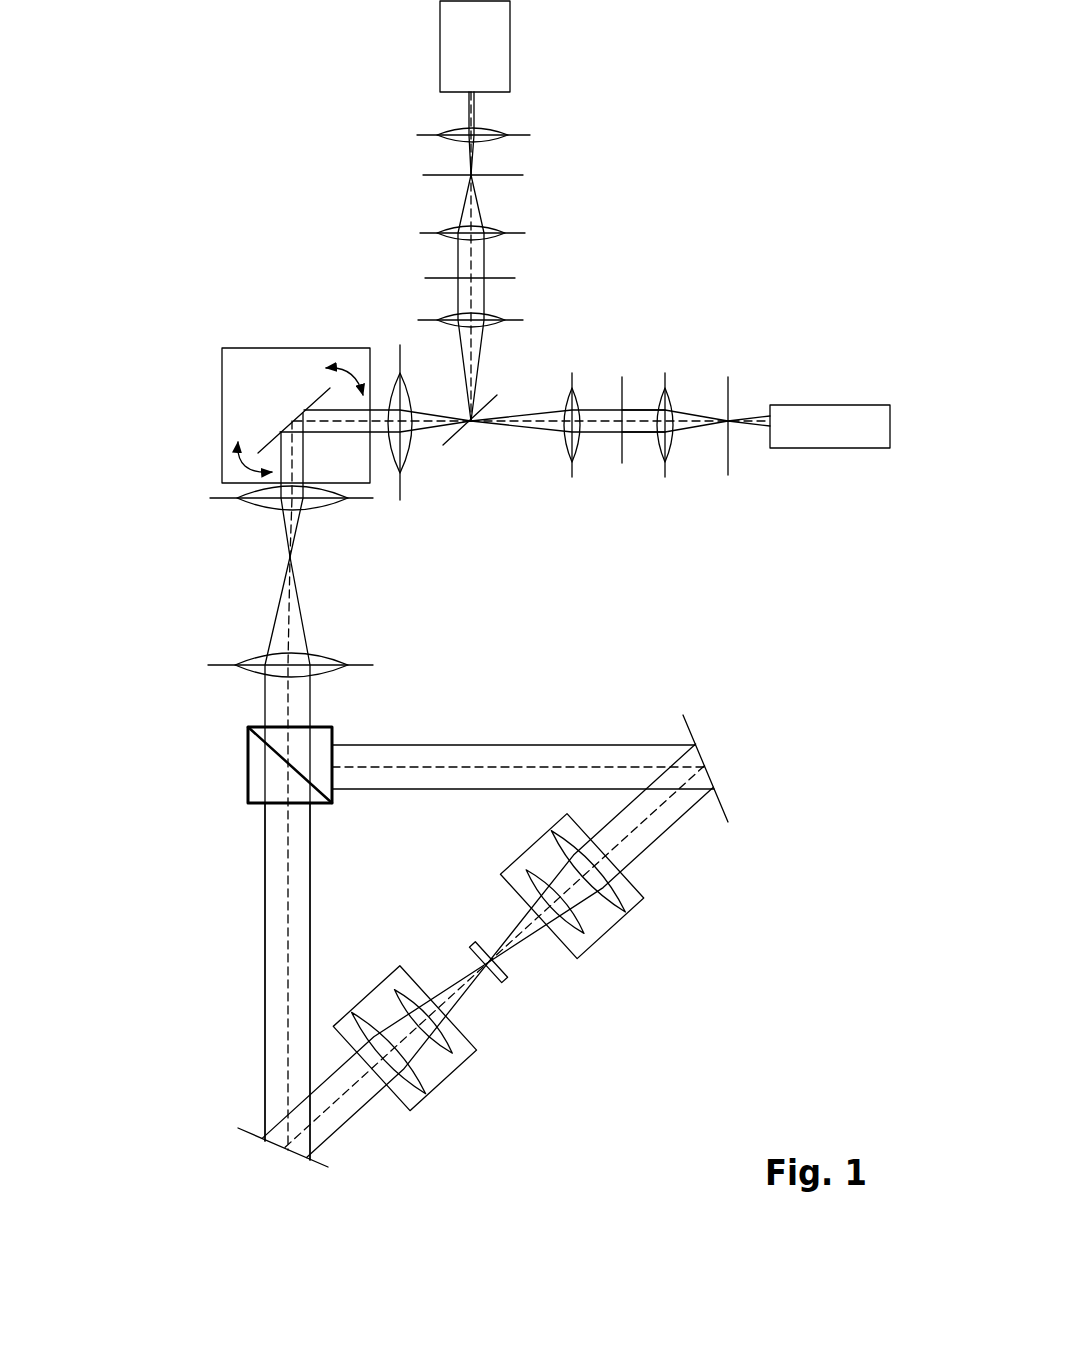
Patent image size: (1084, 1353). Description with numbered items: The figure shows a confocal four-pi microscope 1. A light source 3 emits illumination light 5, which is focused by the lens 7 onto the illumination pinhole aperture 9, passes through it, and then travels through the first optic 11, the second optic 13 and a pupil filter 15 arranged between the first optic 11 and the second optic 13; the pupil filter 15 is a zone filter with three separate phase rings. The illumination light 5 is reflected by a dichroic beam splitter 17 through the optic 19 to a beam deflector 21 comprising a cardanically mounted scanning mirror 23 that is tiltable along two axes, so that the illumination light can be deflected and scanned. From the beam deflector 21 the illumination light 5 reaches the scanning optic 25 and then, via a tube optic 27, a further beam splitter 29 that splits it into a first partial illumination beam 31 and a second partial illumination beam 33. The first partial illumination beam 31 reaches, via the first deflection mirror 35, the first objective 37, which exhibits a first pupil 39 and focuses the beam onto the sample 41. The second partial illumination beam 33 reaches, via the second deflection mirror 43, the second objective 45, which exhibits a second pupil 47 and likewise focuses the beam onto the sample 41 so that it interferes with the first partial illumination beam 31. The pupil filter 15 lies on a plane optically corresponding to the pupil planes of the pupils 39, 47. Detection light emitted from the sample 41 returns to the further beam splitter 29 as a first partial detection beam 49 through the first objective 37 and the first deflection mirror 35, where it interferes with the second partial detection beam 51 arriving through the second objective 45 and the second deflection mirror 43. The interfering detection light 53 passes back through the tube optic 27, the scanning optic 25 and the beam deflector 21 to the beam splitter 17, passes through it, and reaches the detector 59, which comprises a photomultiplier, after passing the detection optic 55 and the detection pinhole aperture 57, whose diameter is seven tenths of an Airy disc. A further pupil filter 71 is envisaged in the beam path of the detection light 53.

The confocal 4-pi microscope 1 is at (504, 612).
The light source 3 is at (458, 40).
The illumination light 5 is at (477, 108).
The lens 7 is at (458, 130).
The illumination pinhole aperture 9 is at (482, 174).
The first optic 11 is at (500, 230).
The second optic 13 is at (497, 315).
The pupil filter 15 is at (438, 278).
The beam splitter 17 is at (455, 437).
The optic 19 is at (395, 438).
The beam deflector 21 is at (277, 360).
The scanning mirror 23 is at (270, 442).
The scanning optic 25 is at (247, 502).
The tube optic 27 is at (253, 663).
The further beam splitter 29 is at (332, 800).
The first partial illumination beam 31 is at (523, 730).
The second partial illumination beam 33 is at (210, 981).
The first deflection mirror 35 is at (693, 733).
The first objective 37 is at (603, 913).
The first pupil 39 is at (637, 882).
The sample 41 is at (503, 977).
The second deflection mirror 43 is at (290, 1153).
The second objective 45 is at (433, 1065).
The second pupil 47 is at (400, 1077).
The first partial detection beam 49 is at (553, 757).
The second partial detection beam 51 is at (272, 982).
The interfering detection light 53 is at (640, 417).
The detection optic 55 is at (660, 450).
The detection pinhole aperture 57 is at (730, 465).
The detector 59 is at (852, 433).
The further pupil filter 71 is at (620, 394).